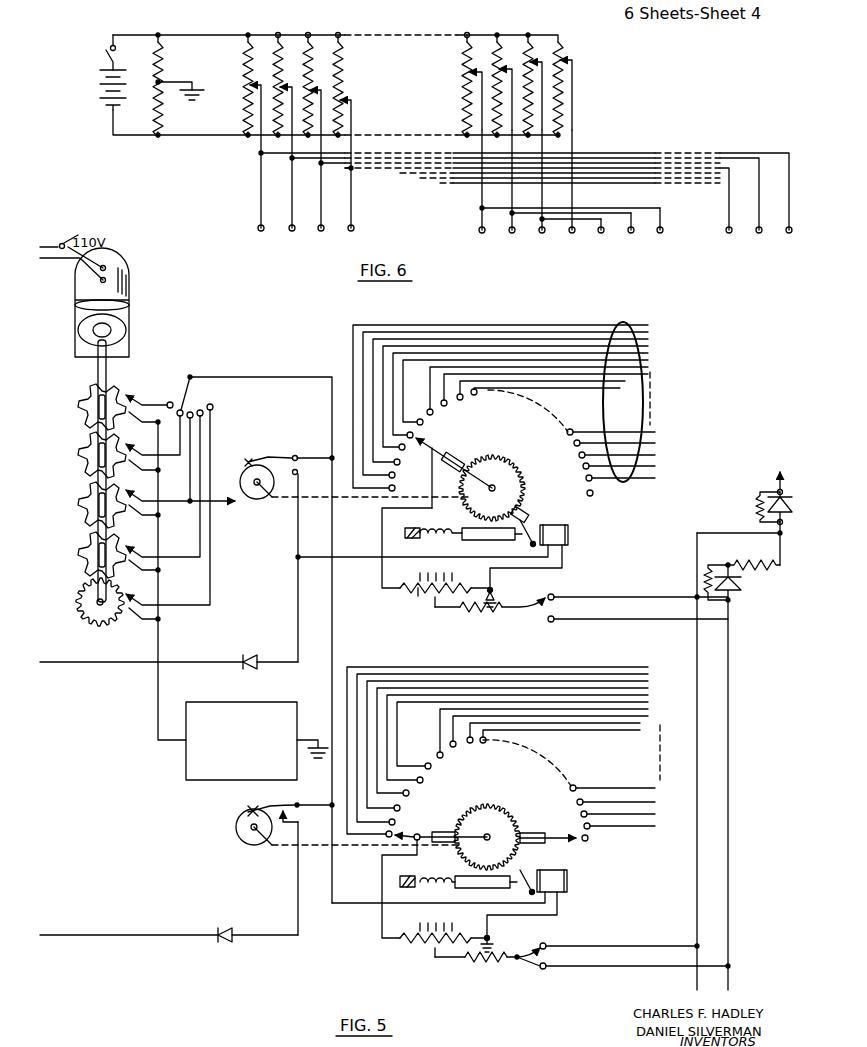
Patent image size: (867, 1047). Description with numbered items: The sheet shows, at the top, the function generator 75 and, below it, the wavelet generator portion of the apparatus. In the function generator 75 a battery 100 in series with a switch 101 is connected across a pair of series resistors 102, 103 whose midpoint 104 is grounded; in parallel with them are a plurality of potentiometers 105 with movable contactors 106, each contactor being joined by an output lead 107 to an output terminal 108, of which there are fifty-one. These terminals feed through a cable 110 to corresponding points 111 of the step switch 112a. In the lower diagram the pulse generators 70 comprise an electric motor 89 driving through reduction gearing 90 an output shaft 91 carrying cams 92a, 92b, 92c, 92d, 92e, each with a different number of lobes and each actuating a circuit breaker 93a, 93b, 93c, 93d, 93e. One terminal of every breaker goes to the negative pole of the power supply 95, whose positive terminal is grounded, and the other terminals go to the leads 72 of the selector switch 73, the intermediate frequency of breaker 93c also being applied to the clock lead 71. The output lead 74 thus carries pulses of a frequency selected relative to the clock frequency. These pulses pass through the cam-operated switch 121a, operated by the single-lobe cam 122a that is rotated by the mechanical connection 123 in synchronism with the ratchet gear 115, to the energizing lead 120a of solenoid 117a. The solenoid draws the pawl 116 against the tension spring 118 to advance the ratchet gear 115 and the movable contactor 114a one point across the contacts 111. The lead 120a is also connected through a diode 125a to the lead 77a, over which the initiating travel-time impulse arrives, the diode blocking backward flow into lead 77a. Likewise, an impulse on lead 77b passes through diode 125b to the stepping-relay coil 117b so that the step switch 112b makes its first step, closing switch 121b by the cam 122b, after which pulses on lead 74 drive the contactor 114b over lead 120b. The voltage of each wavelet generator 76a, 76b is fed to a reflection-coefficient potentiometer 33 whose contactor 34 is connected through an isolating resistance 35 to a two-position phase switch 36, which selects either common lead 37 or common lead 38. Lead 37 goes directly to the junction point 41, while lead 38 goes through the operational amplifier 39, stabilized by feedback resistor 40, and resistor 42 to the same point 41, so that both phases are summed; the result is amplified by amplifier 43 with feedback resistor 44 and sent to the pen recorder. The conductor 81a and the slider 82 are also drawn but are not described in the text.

In FIG. 6, the battery 100 is at (100, 92).
In FIG. 6, the switch 101 is at (104, 55).
In FIG. 6, the series resistor 102 is at (160, 50).
In FIG. 6, the series resistor 103 is at (186, 100).
In FIG. 6, the midpoint 104 is at (153, 86).
In FIG. 6, the potentiometers 105 is at (247, 75).
In FIG. 6, the movable contactors 106 is at (344, 99).
In FIG. 6, the output leads 107 is at (293, 183).
In FIG. 6, the output terminals 108 is at (475, 229).
In FIG. 6, the function generator 75 is at (334, 25).
In FIG. 5, the electric motor 89 is at (75, 293).
In FIG. 5, the reduction gearing 90 is at (86, 332).
In FIG. 5, the output shaft 91 is at (100, 368).
In FIG. 5, the cam 92a is at (80, 406).
In FIG. 5, the cam 92b is at (80, 459).
In FIG. 5, the cam 92c is at (80, 511).
In FIG. 5, the cam 92d is at (80, 561).
In FIG. 5, the cam 92e is at (82, 611).
In FIG. 5, the circuit breaker 93a is at (132, 392).
In FIG. 5, the circuit breaker 93b is at (128, 445).
In FIG. 5, the circuit breaker 93c is at (128, 493).
In FIG. 5, the circuit breaker 93d is at (128, 545).
In FIG. 5, the circuit breaker 93e is at (128, 596).
In FIG. 5, the pulse generators 70 is at (76, 427).
In FIG. 5, the lead 71 is at (214, 508).
In FIG. 5, the leads 72 is at (185, 414).
In FIG. 5, the selector switch 73 is at (183, 403).
In FIG. 5, the output lead 74 is at (298, 377).
In FIG. 5, the cam-operated switch 121a is at (272, 460).
In FIG. 5, the cam 122a is at (262, 500).
In FIG. 5, the mechanical connection 123 is at (297, 556).
In FIG. 5, the diode 125a is at (251, 655).
In FIG. 5, the lead 77a is at (125, 662).
In FIG. 5, the power supply 95 is at (186, 762).
In FIG. 5, the cam-operated switch 121b is at (290, 804).
In FIG. 5, the cam 122b is at (246, 840).
In FIG. 5, the diode 125b is at (226, 925).
In FIG. 5, the lead 77b is at (147, 935).
In FIG. 5, the step switch 112a is at (550, 452).
In FIG. 5, the points 111 is at (436, 410).
In FIG. 5, the ratchet gear 115 is at (510, 490).
In FIG. 5, the movable contactor 114a is at (421, 437).
In FIG. 5, the wavelet generator 76a is at (589, 504).
In FIG. 5, the cable 110 is at (636, 484).
In FIG. 5, the conductor 81a is at (382, 522).
In FIG. 5, the tension spring 118 is at (430, 539).
In FIG. 5, the pawl 116 is at (495, 541).
In FIG. 5, the solenoid 117a is at (568, 542).
In FIG. 5, the energizing lead 120a is at (380, 558).
In FIG. 5, the slider 82 is at (468, 636).
In FIG. 5, the reflection-coefficient potentiometer 33 is at (416, 600).
In FIG. 5, the potentiometer contactor 34 is at (435, 603).
In FIG. 5, the isolating resistance 35 is at (465, 609).
In FIG. 5, the two-position switch 36 is at (548, 606).
In FIG. 5, the amplifier 43 is at (786, 504).
In FIG. 5, the feedback resistor 44 is at (758, 506).
In FIG. 5, the junction point 41 is at (782, 536).
In FIG. 5, the resistor 42 is at (752, 567).
In FIG. 5, the feedback resistor 40 is at (708, 580).
In FIG. 5, the operational amplifier 39 is at (740, 593).
In FIG. 5, the common lead 37 is at (697, 765).
In FIG. 5, the common lead 38 is at (728, 803).
In FIG. 5, the step switch 112b is at (548, 793).
In FIG. 5, the movable contactor 114b is at (420, 832).
In FIG. 5, the wavelet generator 76b is at (594, 846).
In FIG. 5, the energizing lead 120b is at (382, 902).
In FIG. 5, the stepping-relay coil 117b is at (567, 885).